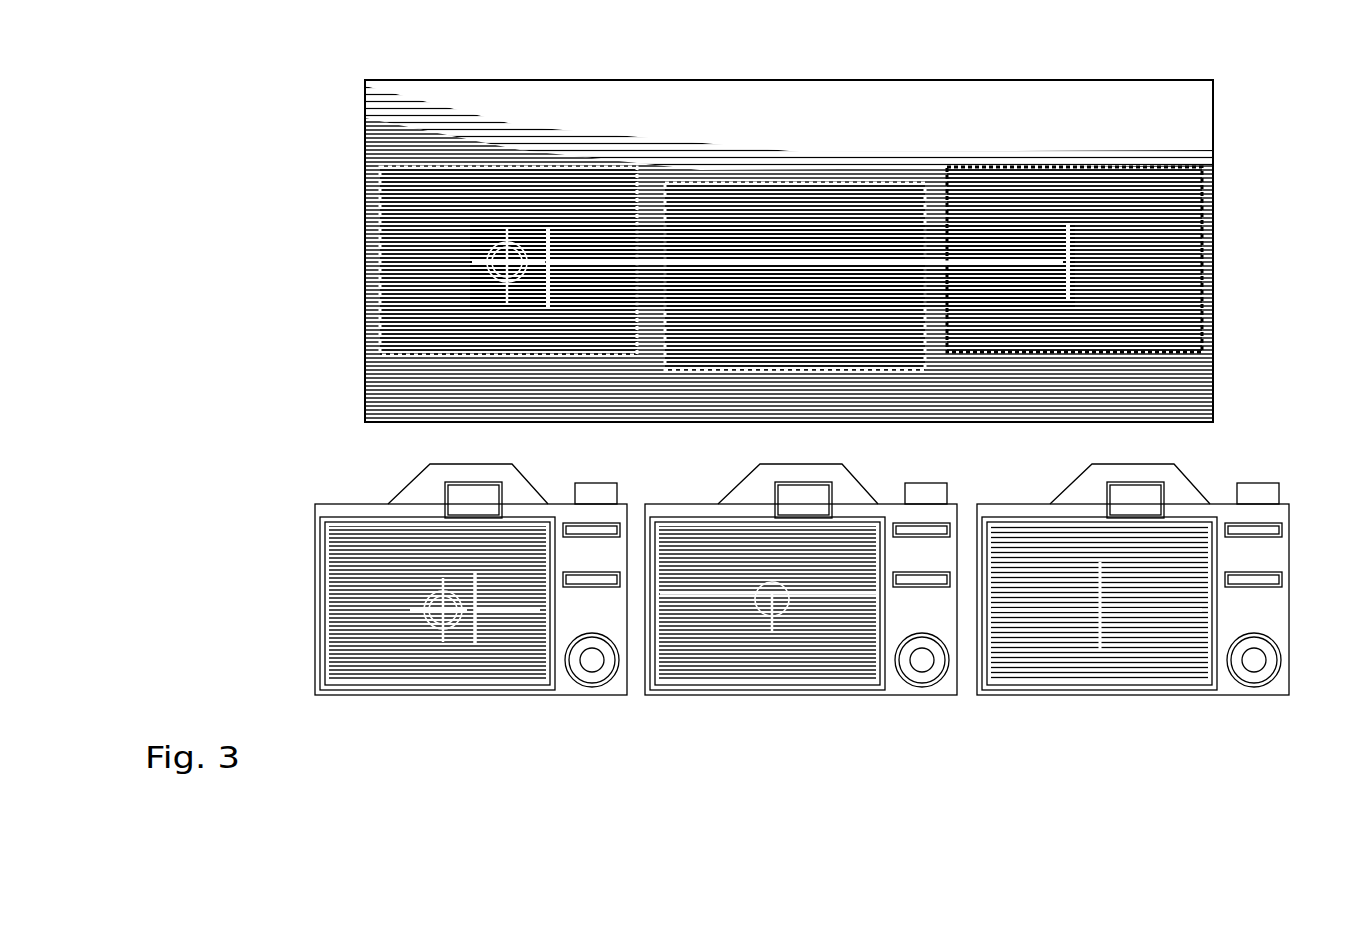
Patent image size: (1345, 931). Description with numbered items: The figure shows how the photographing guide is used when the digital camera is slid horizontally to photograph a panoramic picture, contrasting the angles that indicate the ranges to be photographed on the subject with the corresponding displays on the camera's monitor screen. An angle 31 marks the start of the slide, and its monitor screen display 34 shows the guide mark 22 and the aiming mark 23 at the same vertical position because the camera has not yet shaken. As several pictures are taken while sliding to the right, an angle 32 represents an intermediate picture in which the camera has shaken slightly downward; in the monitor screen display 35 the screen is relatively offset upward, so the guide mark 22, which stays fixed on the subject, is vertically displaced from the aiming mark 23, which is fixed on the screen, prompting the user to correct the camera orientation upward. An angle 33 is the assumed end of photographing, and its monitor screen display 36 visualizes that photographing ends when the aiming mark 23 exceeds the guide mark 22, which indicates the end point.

The guide mark 22 is at (812, 258).
The aiming mark 23 is at (487, 250).
The angle 31 is at (508, 191).
The angle 32 is at (795, 201).
The angle 33 is at (1074, 189).
The monitor screen display 34 is at (471, 617).
The monitor screen display 35 is at (801, 617).
The monitor screen display 36 is at (1133, 617).